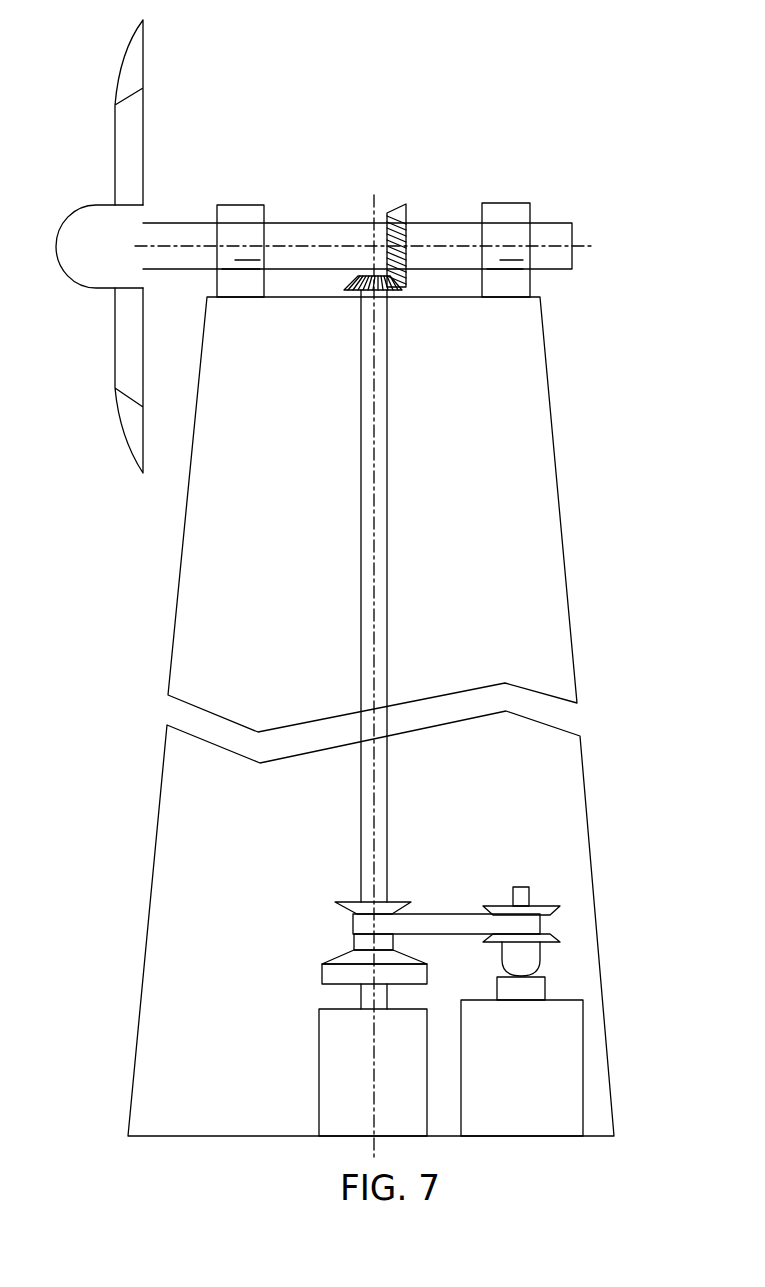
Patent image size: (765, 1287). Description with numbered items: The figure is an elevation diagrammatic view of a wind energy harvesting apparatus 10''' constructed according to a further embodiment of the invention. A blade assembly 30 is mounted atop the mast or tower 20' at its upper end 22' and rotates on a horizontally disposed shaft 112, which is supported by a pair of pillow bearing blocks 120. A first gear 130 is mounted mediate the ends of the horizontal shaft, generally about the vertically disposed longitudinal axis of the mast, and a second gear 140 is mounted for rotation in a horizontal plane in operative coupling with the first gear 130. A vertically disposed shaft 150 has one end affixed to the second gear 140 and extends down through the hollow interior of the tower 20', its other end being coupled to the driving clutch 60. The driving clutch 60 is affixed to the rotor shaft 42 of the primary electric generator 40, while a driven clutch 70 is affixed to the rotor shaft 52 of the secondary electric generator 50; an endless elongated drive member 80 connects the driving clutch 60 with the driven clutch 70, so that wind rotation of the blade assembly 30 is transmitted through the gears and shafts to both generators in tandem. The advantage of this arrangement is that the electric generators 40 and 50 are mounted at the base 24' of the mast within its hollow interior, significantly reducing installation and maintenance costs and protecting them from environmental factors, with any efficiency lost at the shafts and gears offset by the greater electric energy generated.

The wind energy harvesting apparatus 10''' is at (371, 588).
The blade assembly 30 is at (117, 78).
The horizontally disposed shaft 112 is at (318, 228).
The pillow bearing blocks 120 is at (235, 205).
The first gear 130 is at (395, 210).
The second gear 140 is at (360, 292).
The vertically disposed shaft 150 is at (364, 566).
The mast or tower 20' is at (410, 716).
The upper end of the mast 22' is at (397, 514).
The base of the mast 24' is at (410, 923).
The driving clutch 60 is at (348, 902).
The drive member 80 is at (442, 914).
The driven clutch 70 is at (548, 900).
The rotor shaft of the primary electric generator 42 is at (361, 992).
The primary electric generator 40 is at (357, 1054).
The rotor shaft of the secondary electric generator 52 is at (545, 990).
The secondary electric generator 50 is at (559, 1066).